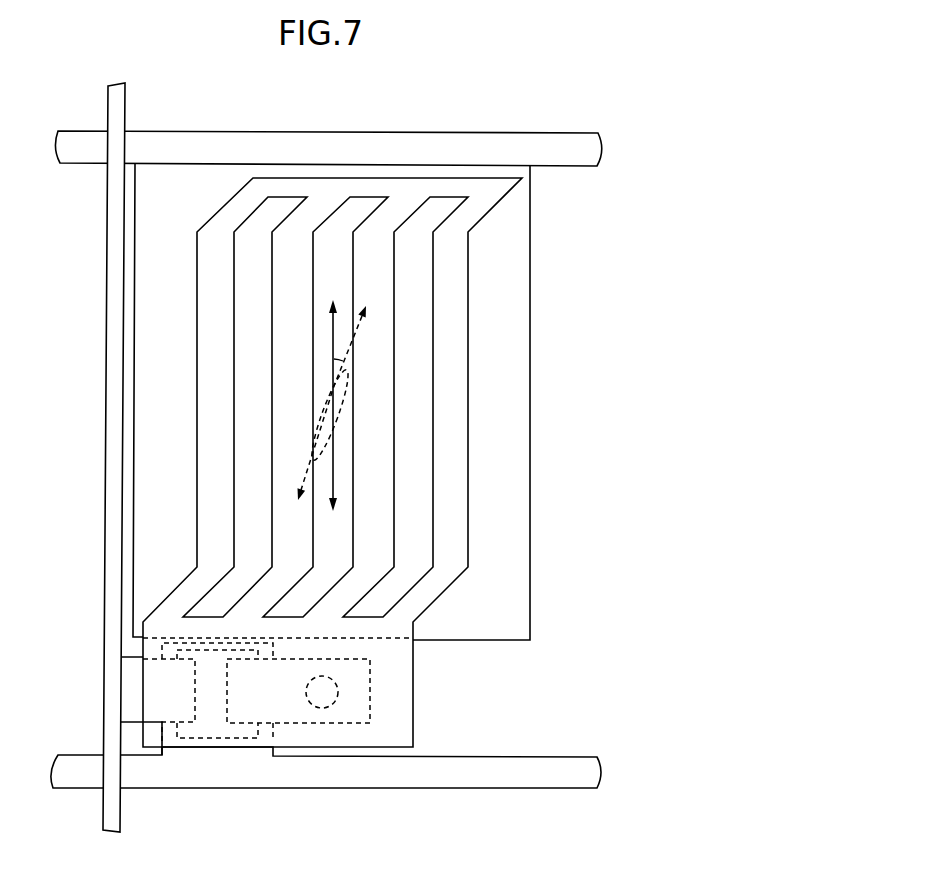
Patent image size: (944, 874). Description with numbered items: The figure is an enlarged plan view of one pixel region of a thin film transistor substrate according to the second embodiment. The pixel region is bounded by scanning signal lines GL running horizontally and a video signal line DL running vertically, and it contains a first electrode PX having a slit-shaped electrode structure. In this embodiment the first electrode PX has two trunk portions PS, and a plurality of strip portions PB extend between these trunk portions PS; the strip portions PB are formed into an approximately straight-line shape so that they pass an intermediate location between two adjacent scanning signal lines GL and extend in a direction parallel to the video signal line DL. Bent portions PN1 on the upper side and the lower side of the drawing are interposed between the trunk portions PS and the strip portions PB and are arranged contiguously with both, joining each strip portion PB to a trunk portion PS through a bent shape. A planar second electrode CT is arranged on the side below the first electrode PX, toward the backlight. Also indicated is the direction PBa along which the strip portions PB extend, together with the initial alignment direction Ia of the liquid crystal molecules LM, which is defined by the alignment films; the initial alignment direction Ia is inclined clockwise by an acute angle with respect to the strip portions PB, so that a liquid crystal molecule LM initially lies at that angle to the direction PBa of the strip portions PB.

The second electrode CT is at (176, 143).
The scanning signal line GL is at (322, 777).
The video signal line DL is at (113, 386).
The first electrode PX is at (476, 423).
The trunk portion PS is at (288, 187).
The strip portion PB is at (293, 333).
The direction along which the strip portions extend PBa is at (334, 334).
The bent portion PN1 is at (308, 214).
The initial alignment direction Ia is at (358, 323).
The liquid crystal molecule LM is at (343, 410).